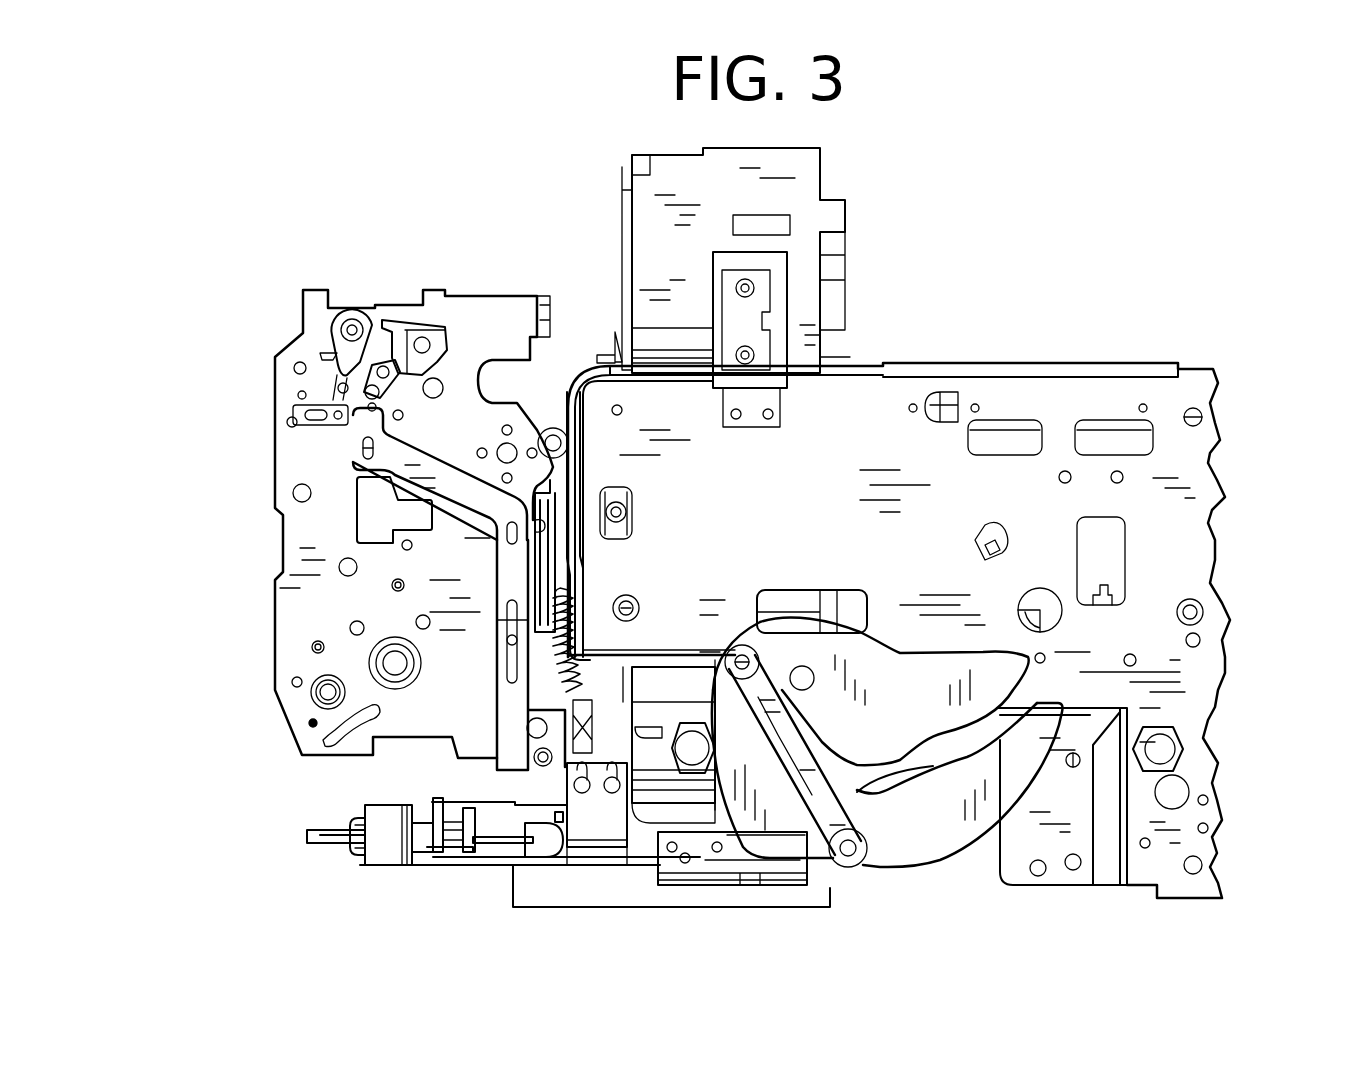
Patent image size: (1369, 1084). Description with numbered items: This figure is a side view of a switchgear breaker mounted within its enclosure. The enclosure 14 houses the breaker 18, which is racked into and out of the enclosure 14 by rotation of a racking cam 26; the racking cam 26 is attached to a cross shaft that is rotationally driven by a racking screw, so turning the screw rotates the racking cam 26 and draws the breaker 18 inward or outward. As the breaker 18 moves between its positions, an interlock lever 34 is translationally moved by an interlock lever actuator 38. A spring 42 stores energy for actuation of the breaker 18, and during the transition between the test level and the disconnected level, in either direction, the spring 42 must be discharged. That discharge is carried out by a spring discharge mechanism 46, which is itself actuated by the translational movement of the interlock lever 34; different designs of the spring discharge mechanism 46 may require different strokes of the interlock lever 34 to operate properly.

The enclosure 14 is at (1108, 315).
The breaker 18 is at (250, 537).
The racking cam 26 is at (890, 840).
The interlock lever 34 is at (497, 714).
The interlock lever actuator 38 is at (538, 878).
The spring 42 is at (565, 620).
The spring discharge mechanism 46 is at (356, 284).